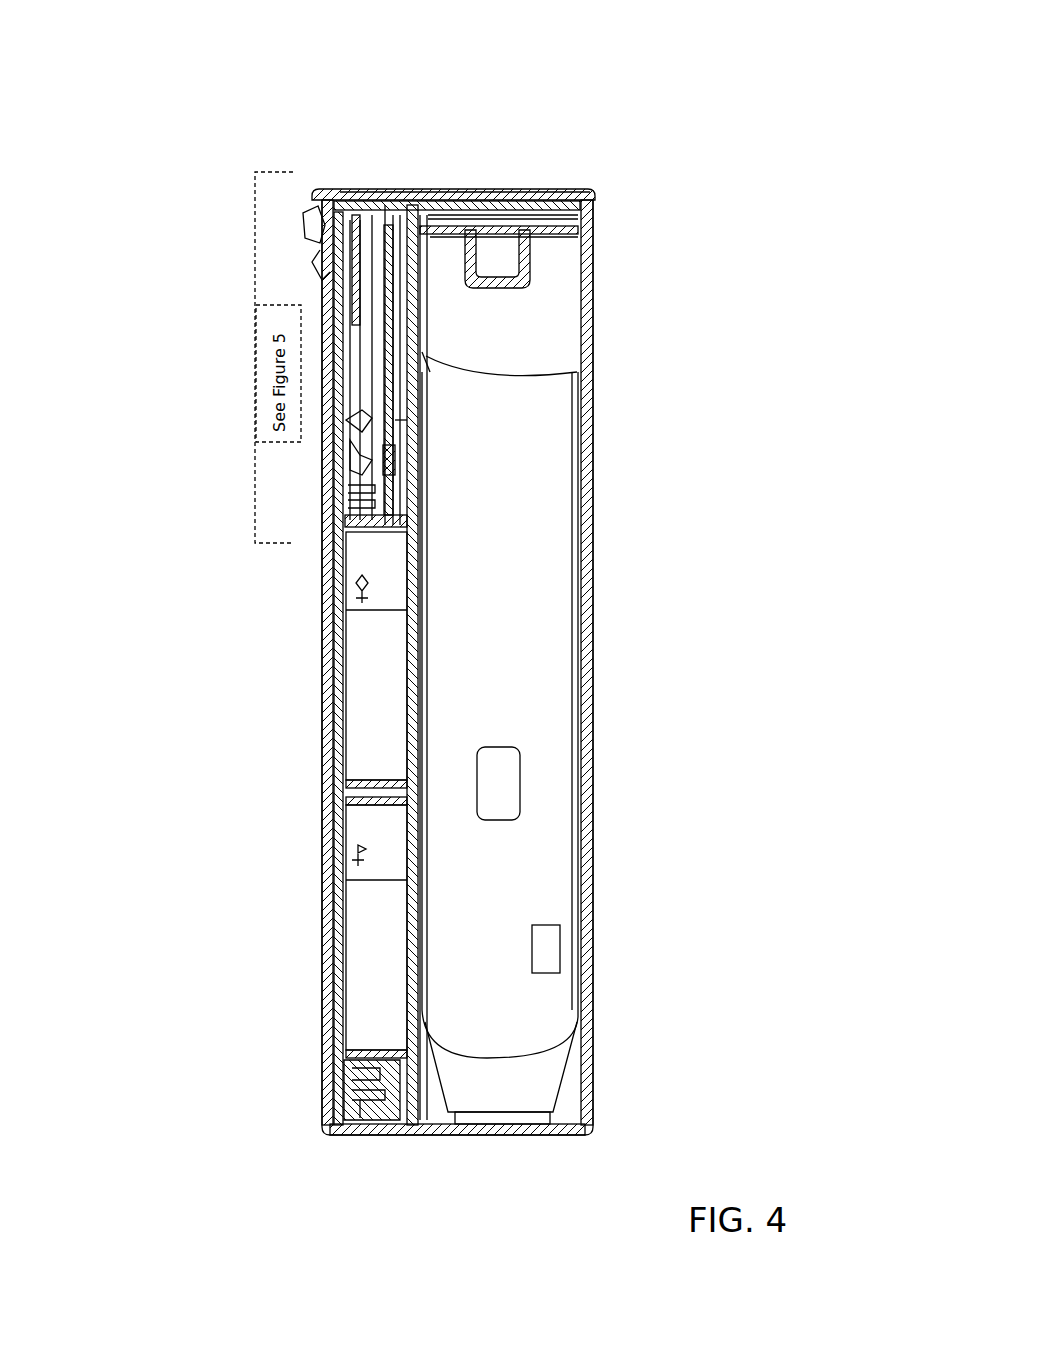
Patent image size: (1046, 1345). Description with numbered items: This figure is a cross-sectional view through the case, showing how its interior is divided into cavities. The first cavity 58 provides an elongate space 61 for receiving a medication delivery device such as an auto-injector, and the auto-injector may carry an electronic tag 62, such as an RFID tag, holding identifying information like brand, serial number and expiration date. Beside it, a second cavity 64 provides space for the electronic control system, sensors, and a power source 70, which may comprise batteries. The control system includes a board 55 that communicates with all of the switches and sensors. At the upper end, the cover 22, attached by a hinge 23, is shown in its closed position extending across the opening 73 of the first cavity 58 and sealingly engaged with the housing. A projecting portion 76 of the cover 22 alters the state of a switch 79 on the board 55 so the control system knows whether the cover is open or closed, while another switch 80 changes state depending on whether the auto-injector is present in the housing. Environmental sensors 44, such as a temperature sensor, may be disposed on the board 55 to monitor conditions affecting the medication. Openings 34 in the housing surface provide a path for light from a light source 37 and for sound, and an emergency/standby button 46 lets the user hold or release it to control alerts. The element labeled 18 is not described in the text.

The container tube 18 is at (502, 855).
The cover 22 is at (572, 195).
The hinge 23 is at (310, 225).
The openings 34 is at (318, 262).
The light source 37 is at (352, 197).
The environmental sensors 44 is at (372, 460).
The emergency/standby button 46 is at (420, 425).
The board 55 is at (380, 497).
The first cavity 58 is at (592, 350).
The elongate space 61 is at (573, 508).
The electronic tag 62 is at (548, 952).
The second cavity 64 is at (323, 600).
The power source 70 is at (380, 732).
The opening of the first cavity 73 is at (582, 186).
The projecting portion 76 is at (487, 187).
The switch 79 is at (385, 196).
The switch 80 is at (430, 353).